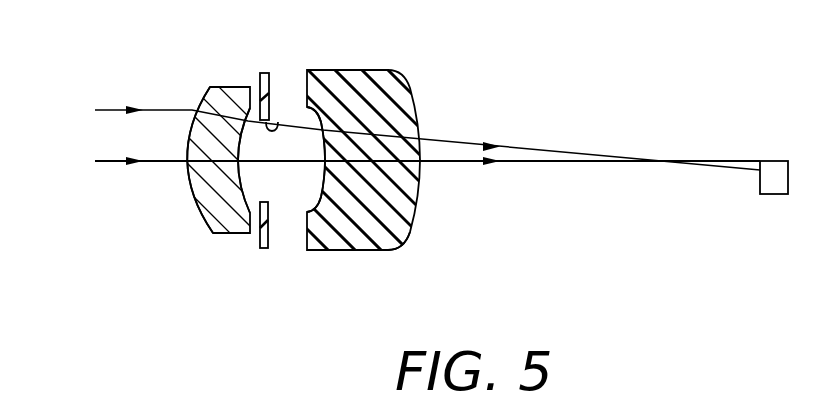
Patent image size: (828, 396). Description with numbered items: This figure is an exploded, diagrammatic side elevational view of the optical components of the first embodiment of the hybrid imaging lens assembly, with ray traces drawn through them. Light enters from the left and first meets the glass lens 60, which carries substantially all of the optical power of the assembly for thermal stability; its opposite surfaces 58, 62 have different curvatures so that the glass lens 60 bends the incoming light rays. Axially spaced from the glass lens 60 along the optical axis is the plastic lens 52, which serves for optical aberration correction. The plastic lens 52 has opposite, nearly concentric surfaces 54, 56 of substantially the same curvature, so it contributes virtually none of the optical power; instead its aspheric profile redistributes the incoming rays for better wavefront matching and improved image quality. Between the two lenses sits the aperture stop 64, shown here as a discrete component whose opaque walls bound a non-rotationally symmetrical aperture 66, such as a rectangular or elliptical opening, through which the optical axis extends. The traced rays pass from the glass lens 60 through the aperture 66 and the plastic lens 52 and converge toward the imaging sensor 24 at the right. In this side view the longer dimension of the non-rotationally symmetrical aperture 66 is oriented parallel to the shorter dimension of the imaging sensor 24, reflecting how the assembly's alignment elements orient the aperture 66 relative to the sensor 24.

The imaging sensor 24 is at (774, 160).
The plastic lens 52 is at (401, 97).
The surface of plastic lens 54 is at (408, 225).
The surface of plastic lens 56 is at (318, 196).
The surface of glass lens 58 is at (243, 175).
The glass lens 60 is at (203, 222).
The surface of glass lens 62 is at (188, 195).
The aperture stop 64 is at (265, 71).
The non-rotationally symmetrical aperture 66 is at (276, 123).